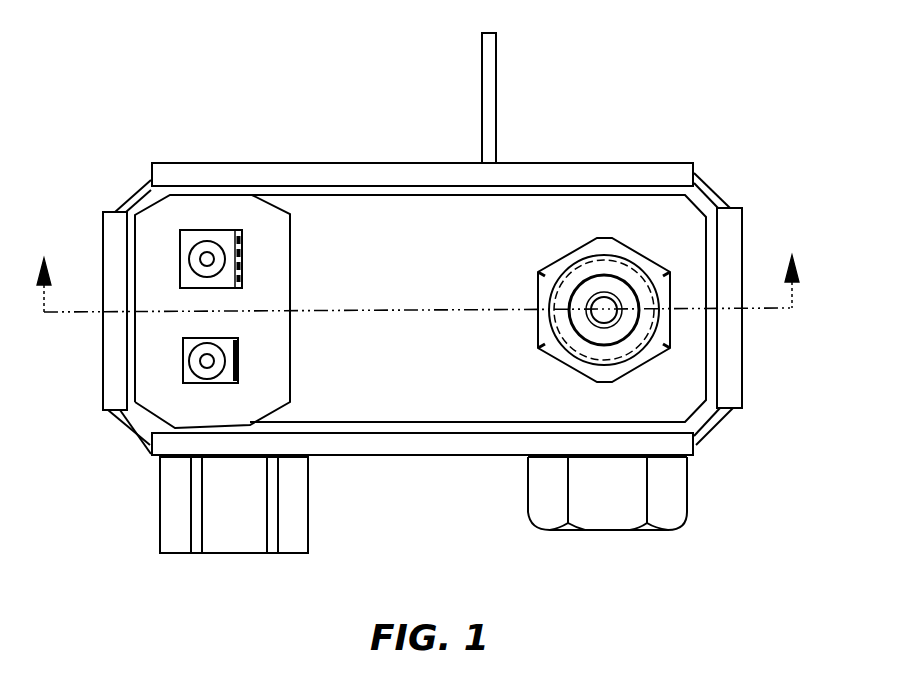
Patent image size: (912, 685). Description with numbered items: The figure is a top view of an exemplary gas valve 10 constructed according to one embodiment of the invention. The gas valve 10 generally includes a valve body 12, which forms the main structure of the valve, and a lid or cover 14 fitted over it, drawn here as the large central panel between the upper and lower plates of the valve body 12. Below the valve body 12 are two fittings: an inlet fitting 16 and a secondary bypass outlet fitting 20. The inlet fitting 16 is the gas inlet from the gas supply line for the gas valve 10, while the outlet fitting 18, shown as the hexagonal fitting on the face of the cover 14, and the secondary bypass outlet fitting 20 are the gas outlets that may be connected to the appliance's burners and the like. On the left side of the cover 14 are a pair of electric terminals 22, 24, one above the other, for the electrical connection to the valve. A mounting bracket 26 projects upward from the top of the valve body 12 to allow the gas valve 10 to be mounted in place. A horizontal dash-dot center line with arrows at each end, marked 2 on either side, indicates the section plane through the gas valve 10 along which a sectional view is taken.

The gas valve 10 is at (686, 72).
The valve body 12 is at (277, 170).
The lid or cover 14 is at (365, 217).
The inlet fitting 16 is at (168, 479).
The outlet fitting 18 is at (574, 250).
The secondary bypass outlet fitting 20 is at (673, 480).
The electric terminal 22 is at (187, 233).
The electric terminal 24 is at (187, 380).
The mounting bracket 26 is at (490, 90).
The section line 2- 2 is at (419, 261).